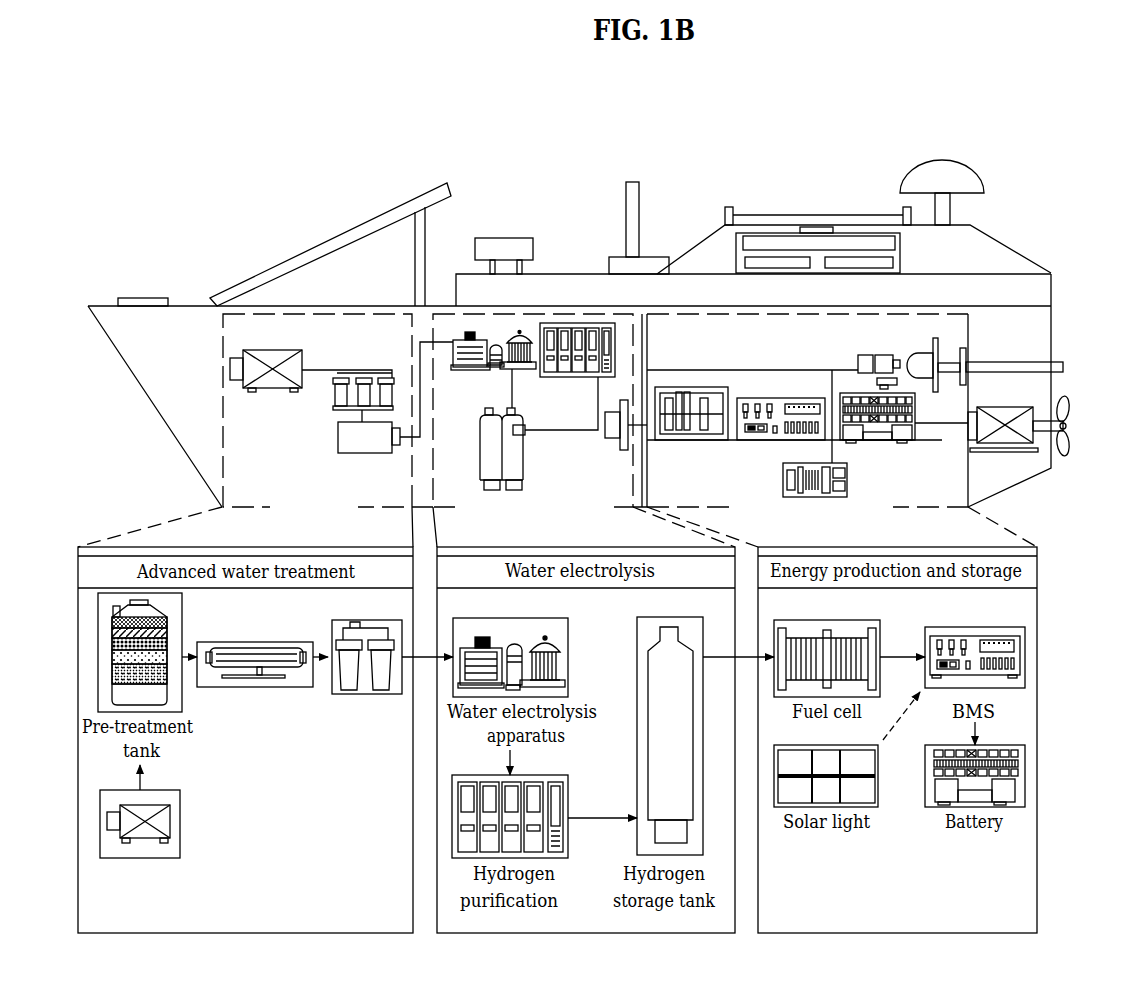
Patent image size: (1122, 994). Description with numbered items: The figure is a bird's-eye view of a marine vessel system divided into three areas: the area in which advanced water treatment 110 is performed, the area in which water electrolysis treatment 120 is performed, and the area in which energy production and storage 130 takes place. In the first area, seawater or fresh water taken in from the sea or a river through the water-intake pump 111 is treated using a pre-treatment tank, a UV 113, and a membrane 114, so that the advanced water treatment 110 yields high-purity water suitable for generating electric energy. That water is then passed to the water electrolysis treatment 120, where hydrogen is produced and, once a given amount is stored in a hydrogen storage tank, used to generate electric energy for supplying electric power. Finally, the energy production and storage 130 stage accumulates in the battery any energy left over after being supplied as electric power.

The advanced water treatment 110 is at (317, 478).
The water electrolysis treatment 120 is at (547, 493).
The energy production and storage 130 is at (748, 495).
The water-intake pump 111 is at (143, 838).
The UV 113 is at (255, 689).
The membrane 114 is at (366, 683).